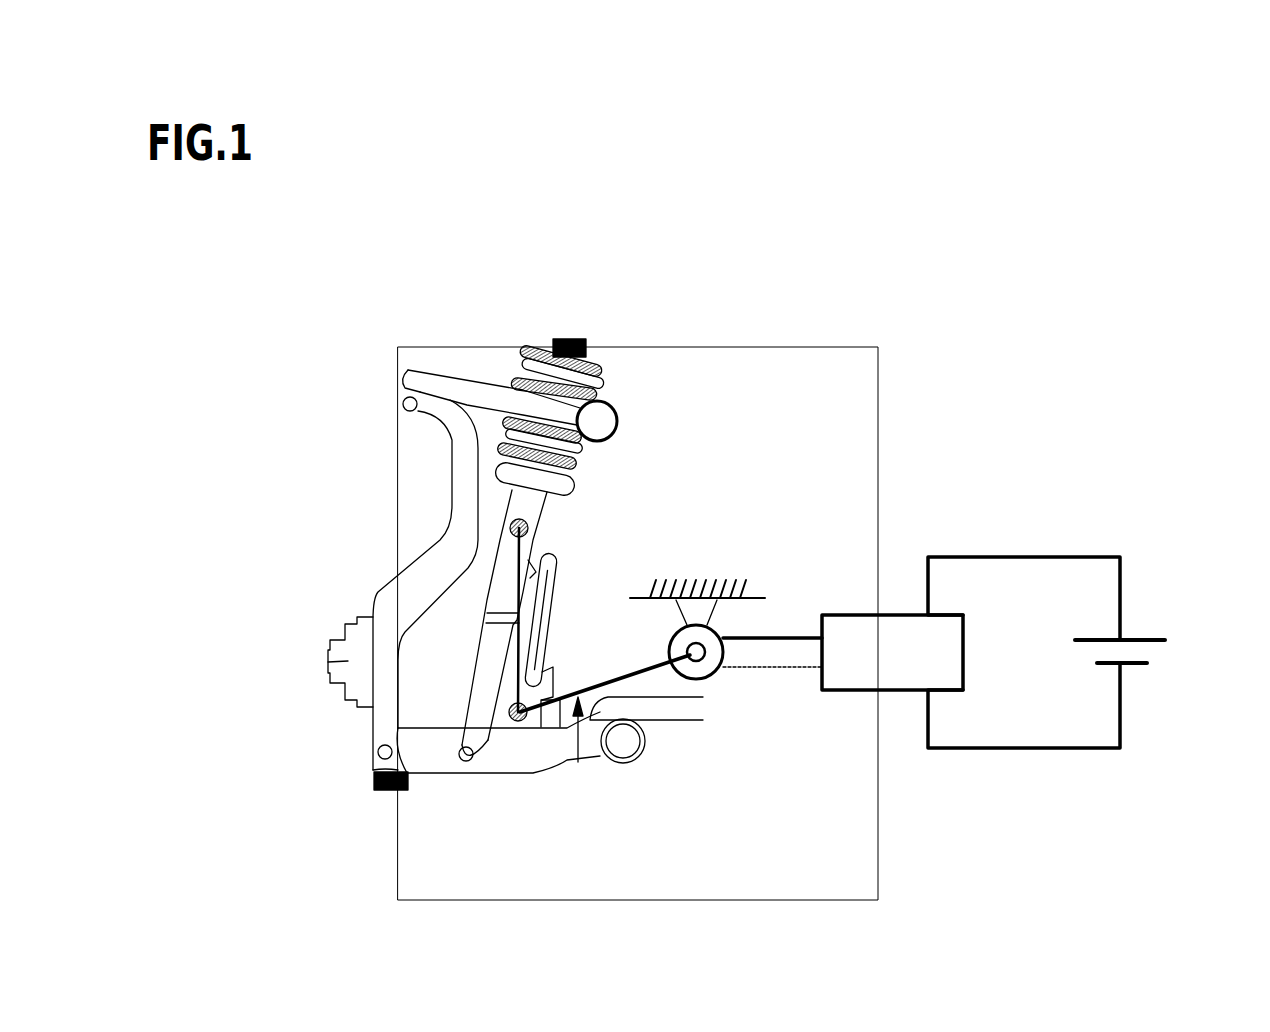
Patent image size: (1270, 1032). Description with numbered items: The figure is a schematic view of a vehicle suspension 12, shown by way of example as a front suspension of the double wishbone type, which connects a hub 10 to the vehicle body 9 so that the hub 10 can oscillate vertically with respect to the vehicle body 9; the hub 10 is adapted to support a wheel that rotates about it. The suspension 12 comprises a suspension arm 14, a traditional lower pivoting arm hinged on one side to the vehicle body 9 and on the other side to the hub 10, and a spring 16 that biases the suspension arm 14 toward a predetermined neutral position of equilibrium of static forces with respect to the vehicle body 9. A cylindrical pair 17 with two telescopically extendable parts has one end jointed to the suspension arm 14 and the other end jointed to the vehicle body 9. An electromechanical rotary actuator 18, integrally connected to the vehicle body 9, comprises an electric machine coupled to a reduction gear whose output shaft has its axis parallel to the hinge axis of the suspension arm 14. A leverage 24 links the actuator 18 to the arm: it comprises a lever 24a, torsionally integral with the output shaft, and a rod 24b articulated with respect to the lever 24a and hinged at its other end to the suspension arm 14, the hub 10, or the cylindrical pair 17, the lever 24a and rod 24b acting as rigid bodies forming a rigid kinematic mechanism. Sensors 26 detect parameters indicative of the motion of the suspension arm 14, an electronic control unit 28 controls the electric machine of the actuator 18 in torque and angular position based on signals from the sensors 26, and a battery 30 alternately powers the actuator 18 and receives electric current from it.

The vehicle body 9 is at (747, 597).
The hub 10 is at (348, 662).
The suspension 12 is at (602, 203).
The suspension arm 14 is at (443, 753).
The spring 16 is at (577, 453).
The cylindrical pair 17 is at (523, 512).
The electromechanical rotary actuator 18 is at (705, 667).
The leverage 24 is at (578, 772).
The lever 24a is at (603, 690).
The rod 24b is at (518, 645).
The sensors 26 is at (568, 338).
The electronic control unit 28 is at (893, 675).
The battery 30 is at (1137, 638).